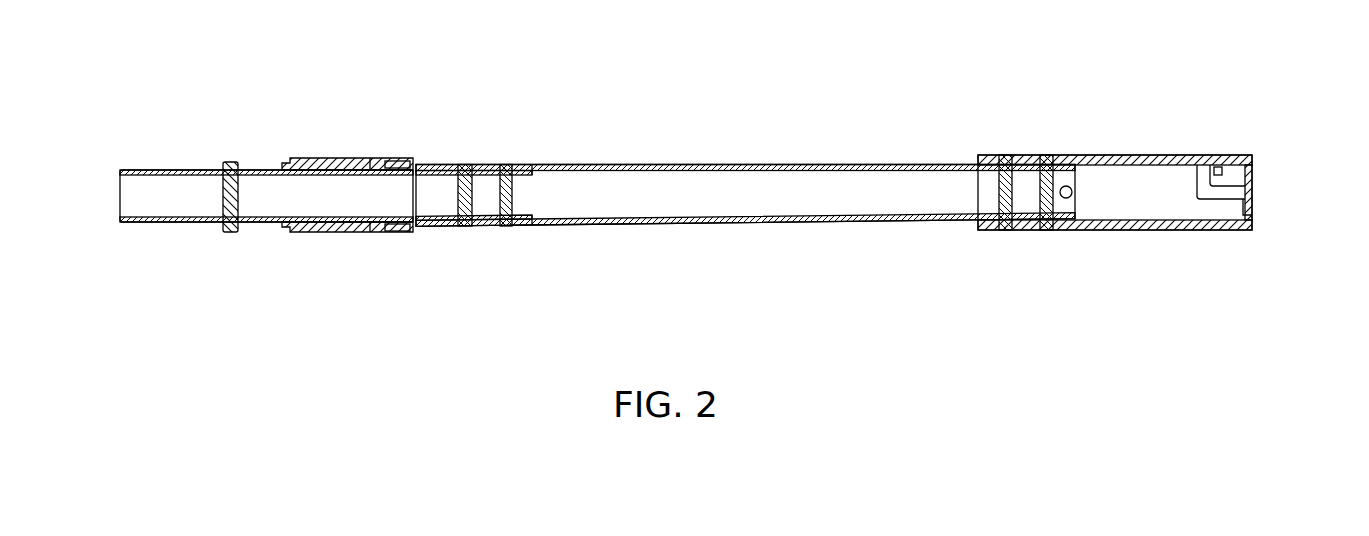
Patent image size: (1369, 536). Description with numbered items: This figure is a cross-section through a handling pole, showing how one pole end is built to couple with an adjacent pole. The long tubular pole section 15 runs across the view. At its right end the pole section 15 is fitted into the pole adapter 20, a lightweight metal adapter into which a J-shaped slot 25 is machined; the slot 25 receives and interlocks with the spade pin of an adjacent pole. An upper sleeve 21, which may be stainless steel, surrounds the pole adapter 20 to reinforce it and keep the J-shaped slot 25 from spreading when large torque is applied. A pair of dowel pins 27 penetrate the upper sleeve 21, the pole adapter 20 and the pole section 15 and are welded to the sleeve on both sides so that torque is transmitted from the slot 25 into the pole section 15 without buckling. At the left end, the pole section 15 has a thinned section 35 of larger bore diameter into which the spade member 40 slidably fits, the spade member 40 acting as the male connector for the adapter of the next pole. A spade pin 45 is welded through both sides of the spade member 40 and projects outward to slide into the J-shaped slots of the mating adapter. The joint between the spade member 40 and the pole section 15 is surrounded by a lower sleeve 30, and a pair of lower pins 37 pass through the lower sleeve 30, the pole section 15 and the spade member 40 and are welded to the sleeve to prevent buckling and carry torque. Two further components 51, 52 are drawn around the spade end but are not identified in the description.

The pole section 15 is at (705, 165).
The pole adapter 20 is at (1168, 160).
The upper sleeve 21 is at (1177, 230).
The J-shaped slot 25 is at (1250, 197).
The dowel pin 27 is at (1047, 230).
The lower sleeve 30 is at (582, 164).
The thinned section 35 is at (530, 226).
The lower pin 37 is at (505, 220).
The spade member 40 is at (140, 170).
The spade pin 45 is at (228, 162).
The locking ring 51 is at (395, 158).
The coupling sleeve 52 is at (330, 158).